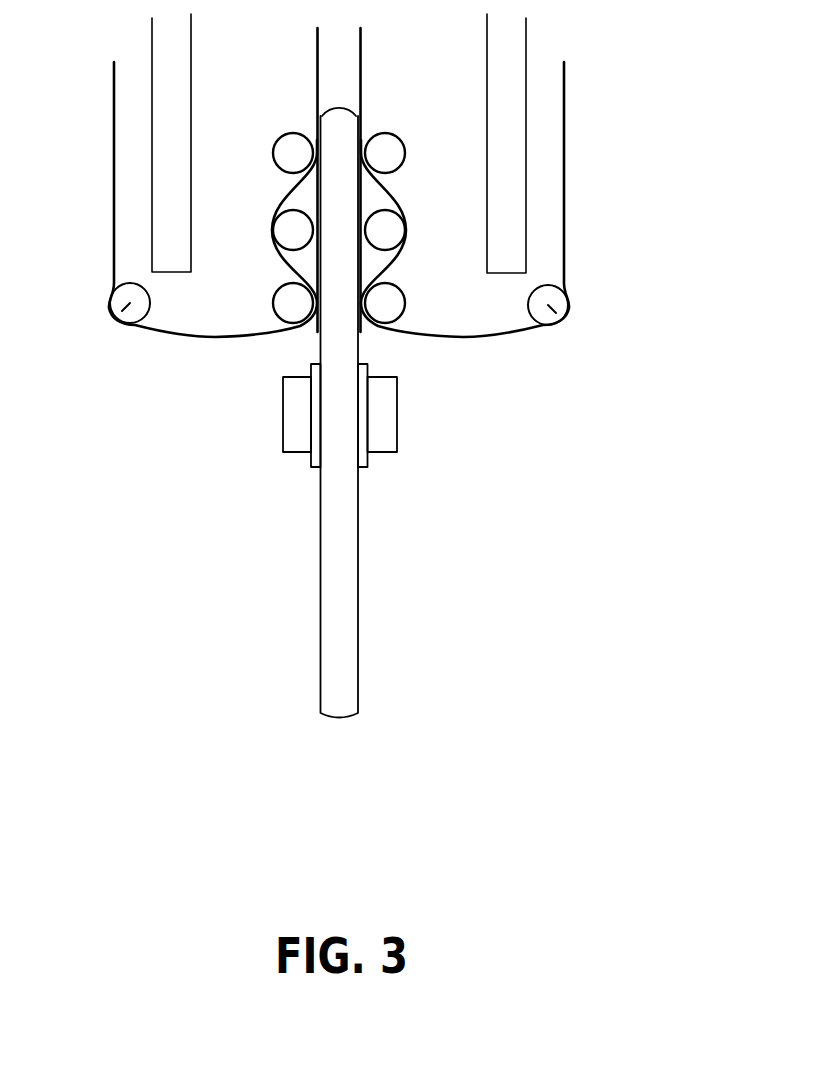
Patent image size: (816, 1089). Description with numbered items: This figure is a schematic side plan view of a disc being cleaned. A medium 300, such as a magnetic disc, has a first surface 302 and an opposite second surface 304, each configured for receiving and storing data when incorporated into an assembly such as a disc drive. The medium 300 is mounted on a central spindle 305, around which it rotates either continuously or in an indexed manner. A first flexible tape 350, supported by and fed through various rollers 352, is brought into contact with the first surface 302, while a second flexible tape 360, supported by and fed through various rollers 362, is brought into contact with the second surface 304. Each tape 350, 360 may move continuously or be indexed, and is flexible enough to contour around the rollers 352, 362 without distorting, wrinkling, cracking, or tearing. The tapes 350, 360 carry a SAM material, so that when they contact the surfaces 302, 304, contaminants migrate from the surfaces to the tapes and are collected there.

The medium 300 is at (427, 518).
The first surface 302 is at (359, 650).
The second surface 304 is at (320, 650).
The central spindle 305 is at (397, 412).
The first flexible tape 350 is at (564, 182).
The rollers 352 is at (565, 315).
The second flexible tape 360 is at (114, 182).
The rollers 362 is at (113, 315).